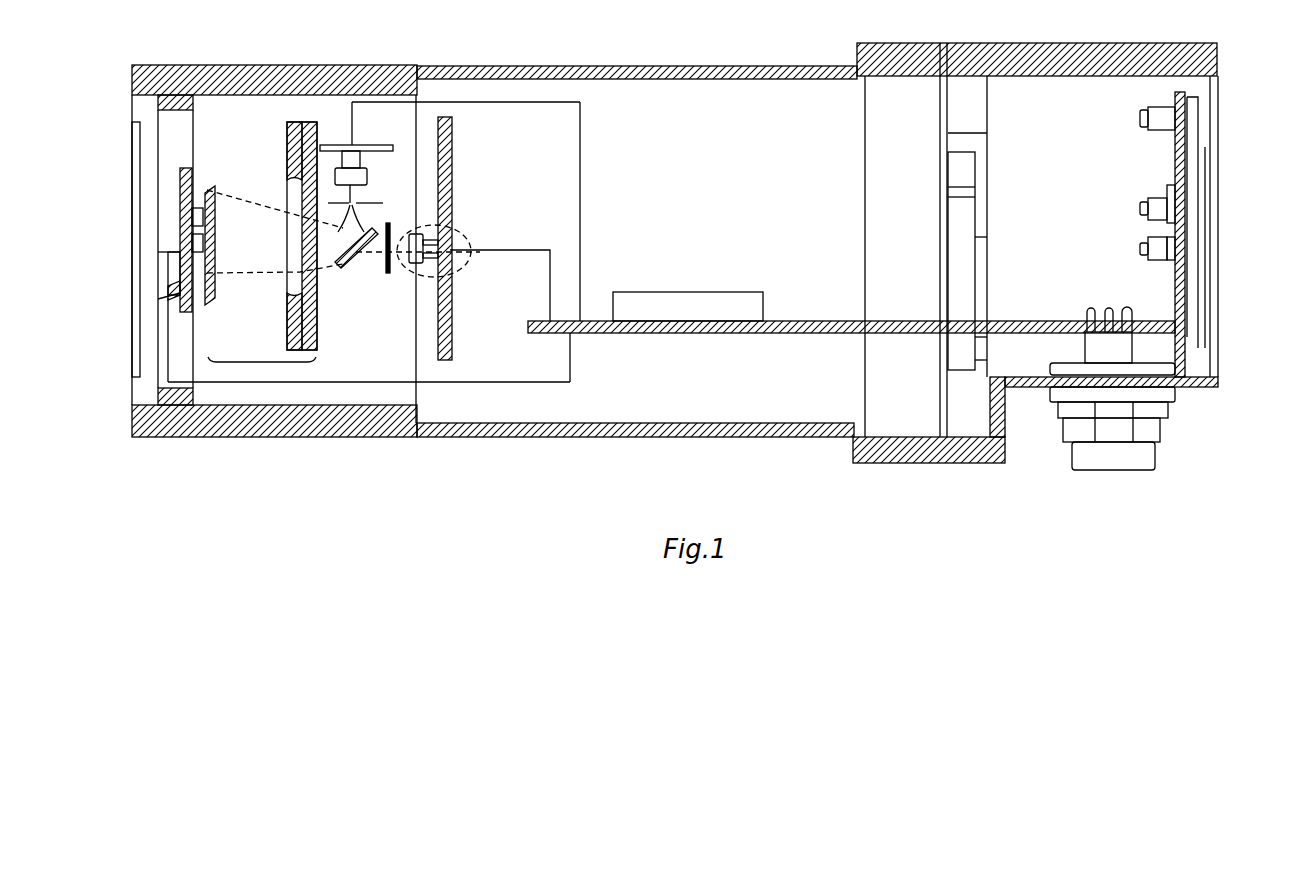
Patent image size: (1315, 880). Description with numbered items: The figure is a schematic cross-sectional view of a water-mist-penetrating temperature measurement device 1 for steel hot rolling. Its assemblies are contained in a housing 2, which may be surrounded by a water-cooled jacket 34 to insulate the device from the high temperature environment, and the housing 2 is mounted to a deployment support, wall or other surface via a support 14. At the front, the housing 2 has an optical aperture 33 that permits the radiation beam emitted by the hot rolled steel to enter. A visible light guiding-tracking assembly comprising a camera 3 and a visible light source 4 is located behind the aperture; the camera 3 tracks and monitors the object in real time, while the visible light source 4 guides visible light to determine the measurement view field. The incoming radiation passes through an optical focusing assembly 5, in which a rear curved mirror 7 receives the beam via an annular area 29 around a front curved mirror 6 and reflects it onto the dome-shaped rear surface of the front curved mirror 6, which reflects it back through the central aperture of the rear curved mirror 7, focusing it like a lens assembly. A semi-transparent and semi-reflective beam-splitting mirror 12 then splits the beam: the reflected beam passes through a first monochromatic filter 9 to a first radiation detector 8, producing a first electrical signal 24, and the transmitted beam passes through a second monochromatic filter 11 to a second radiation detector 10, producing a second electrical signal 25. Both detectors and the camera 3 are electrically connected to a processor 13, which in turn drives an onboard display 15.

The water-mist-penetrating temperature measurement device 1 is at (603, 37).
The housing 2 is at (755, 66).
The camera 3 is at (165, 270).
The visible light source 4 is at (181, 207).
The optical focusing assembly 5 is at (262, 366).
The front curved mirror 6 is at (210, 289).
The rear curved mirror 7 is at (287, 148).
The first radiation detector 8 is at (388, 149).
The first monochromatic filter 9 is at (366, 208).
The second radiation detector 10 is at (462, 238).
The second monochromatic filter 11 is at (383, 278).
The semi-transparent and semi-reflective beam-splitting mirror 12 is at (347, 281).
The processor 13 is at (718, 292).
The support 14 is at (1157, 450).
The onboard display 15 is at (1208, 190).
The first electrical signal 24 is at (581, 172).
The second electrical signal 25 is at (529, 250).
The annular area 29 is at (207, 153).
The optical aperture 33 is at (152, 329).
The water-cooled jacket 34 is at (363, 66).